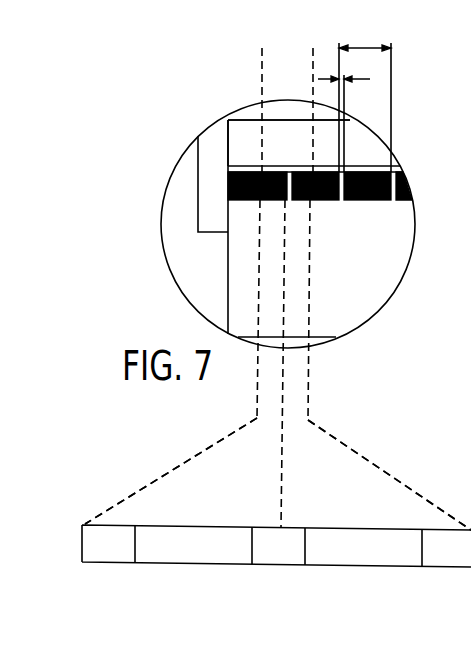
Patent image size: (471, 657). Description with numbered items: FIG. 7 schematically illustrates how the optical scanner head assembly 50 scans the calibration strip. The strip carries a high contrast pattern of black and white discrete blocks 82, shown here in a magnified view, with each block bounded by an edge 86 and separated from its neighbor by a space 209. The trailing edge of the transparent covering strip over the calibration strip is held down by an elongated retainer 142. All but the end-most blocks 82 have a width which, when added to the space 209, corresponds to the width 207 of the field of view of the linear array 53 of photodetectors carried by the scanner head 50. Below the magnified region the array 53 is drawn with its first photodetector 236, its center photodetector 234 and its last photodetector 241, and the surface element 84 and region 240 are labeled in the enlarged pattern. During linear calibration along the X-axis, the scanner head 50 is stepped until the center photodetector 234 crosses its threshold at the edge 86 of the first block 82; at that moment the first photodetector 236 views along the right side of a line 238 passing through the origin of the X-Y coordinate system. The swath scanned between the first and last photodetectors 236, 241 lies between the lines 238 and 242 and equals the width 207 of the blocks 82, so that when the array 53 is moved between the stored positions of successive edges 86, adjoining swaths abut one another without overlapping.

The optical scanner head assembly 50 is at (403, 460).
The linear array of photo detectors 53 is at (353, 528).
The discrete blocks 82 is at (242, 200).
The strip surface 84 is at (300, 172).
The edge of block 86 is at (289, 201).
The elongated retainer 142 is at (323, 133).
The width of the field of view of the array 207 is at (364, 47).
The space 209 is at (344, 75).
The center photodetector 234 is at (267, 540).
The first photo detector 236 is at (115, 540).
The line through point of origin 238 is at (255, 397).
The upper layer 240 is at (262, 120).
The last photodetector 241 is at (435, 540).
The line bounding the scan swath 242 is at (308, 393).